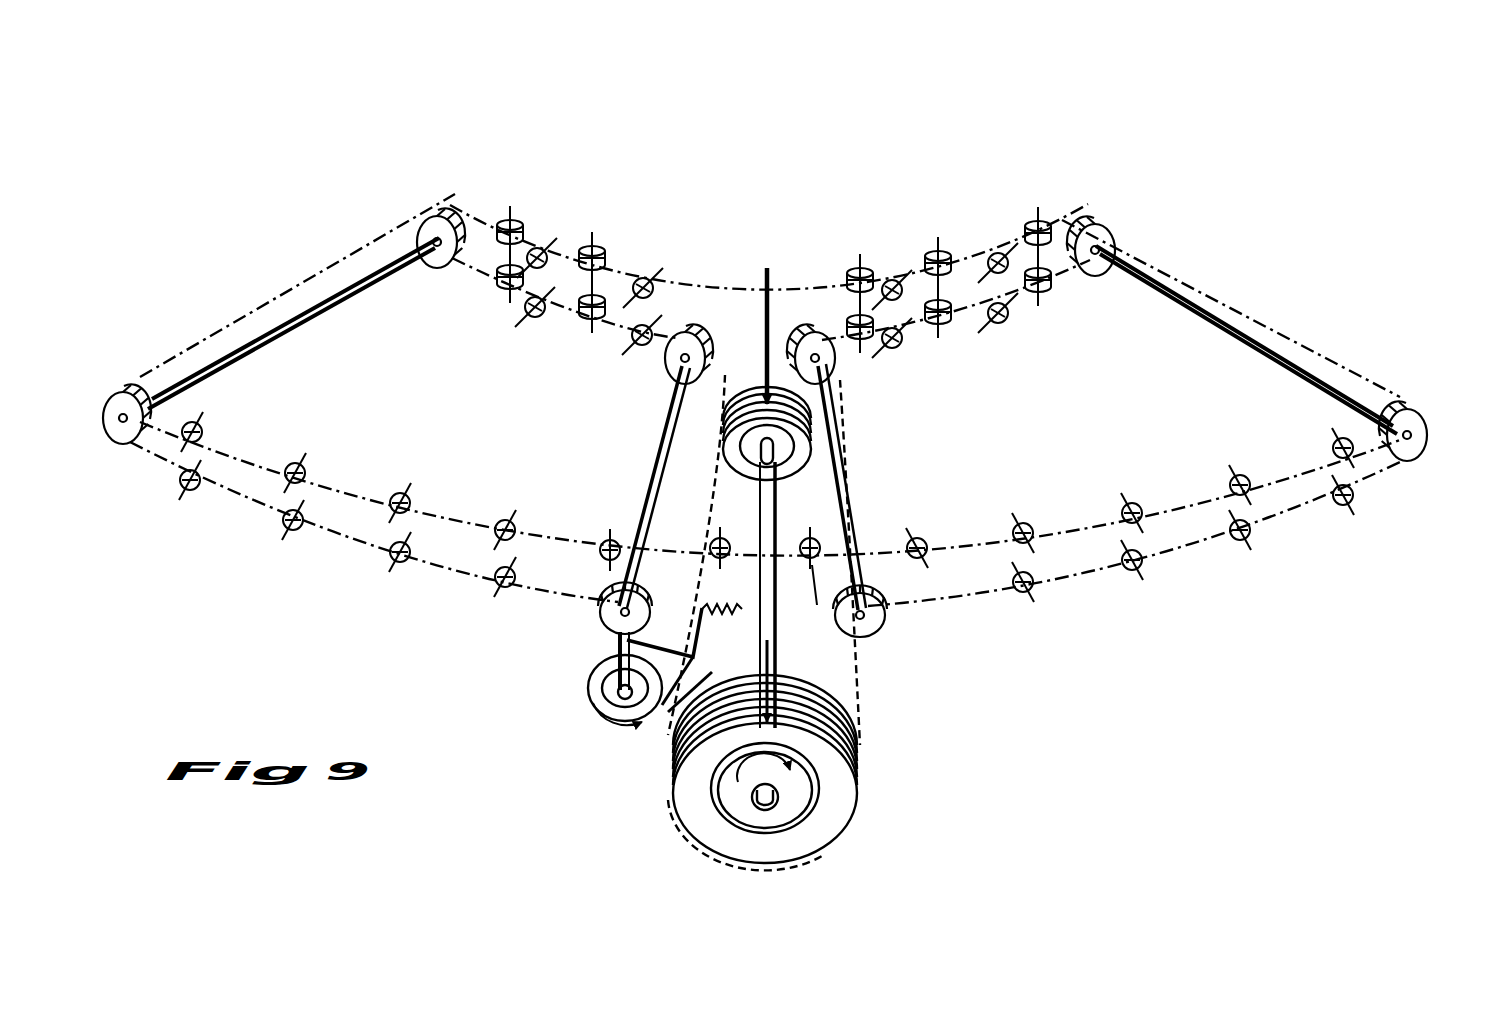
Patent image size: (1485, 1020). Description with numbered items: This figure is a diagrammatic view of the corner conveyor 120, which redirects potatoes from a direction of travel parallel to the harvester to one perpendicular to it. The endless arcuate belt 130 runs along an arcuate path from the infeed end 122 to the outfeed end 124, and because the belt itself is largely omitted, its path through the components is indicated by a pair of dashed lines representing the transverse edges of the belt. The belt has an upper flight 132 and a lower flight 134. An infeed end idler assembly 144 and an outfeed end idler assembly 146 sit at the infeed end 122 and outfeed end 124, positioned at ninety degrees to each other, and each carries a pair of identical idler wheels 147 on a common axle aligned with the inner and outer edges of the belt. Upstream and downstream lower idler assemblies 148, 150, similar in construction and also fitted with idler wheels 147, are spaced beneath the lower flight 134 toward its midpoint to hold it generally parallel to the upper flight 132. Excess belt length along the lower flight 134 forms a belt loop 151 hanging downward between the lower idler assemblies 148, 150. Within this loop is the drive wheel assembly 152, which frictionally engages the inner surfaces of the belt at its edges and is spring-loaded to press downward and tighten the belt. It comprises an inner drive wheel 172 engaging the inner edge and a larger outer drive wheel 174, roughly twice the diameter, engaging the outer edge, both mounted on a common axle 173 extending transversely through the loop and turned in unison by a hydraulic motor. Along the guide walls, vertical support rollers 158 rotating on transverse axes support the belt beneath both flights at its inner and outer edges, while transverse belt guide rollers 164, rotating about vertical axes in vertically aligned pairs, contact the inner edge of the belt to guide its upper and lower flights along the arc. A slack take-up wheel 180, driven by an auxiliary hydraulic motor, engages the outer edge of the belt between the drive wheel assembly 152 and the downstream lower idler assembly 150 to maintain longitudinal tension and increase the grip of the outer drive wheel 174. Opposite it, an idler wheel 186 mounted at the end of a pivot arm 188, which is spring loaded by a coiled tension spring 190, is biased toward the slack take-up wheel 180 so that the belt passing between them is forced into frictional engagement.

The corner conveyor 120 is at (757, 178).
The infeed end 122 is at (343, 250).
The outfeed end 124 is at (1270, 310).
The endless arcuate belt 130 is at (822, 284).
The upper flight 132 is at (643, 266).
The lower flight 134 is at (478, 282).
The infeed end idler assembly 144 is at (254, 332).
The outfeed end idler assembly 146 is at (1210, 316).
The idler wheels 147 is at (130, 392).
The upstream lower idler assembly 148 is at (842, 480).
The downstream lower idler assembly 150 is at (652, 496).
The belt loop 151 is at (728, 376).
The drive wheel assembly 152 is at (754, 512).
The vertical support rollers 158 is at (205, 430).
The transverse belt guide rollers 164 is at (512, 270).
The inner drive wheel 172 is at (792, 470).
The common axle 173 is at (804, 601).
The outer drive wheel 174 is at (784, 848).
The slack take-up wheel 180 is at (583, 690).
The idler wheel 186 is at (667, 723).
The pivot arm 188 is at (680, 680).
The coiled tension spring 190 is at (720, 605).